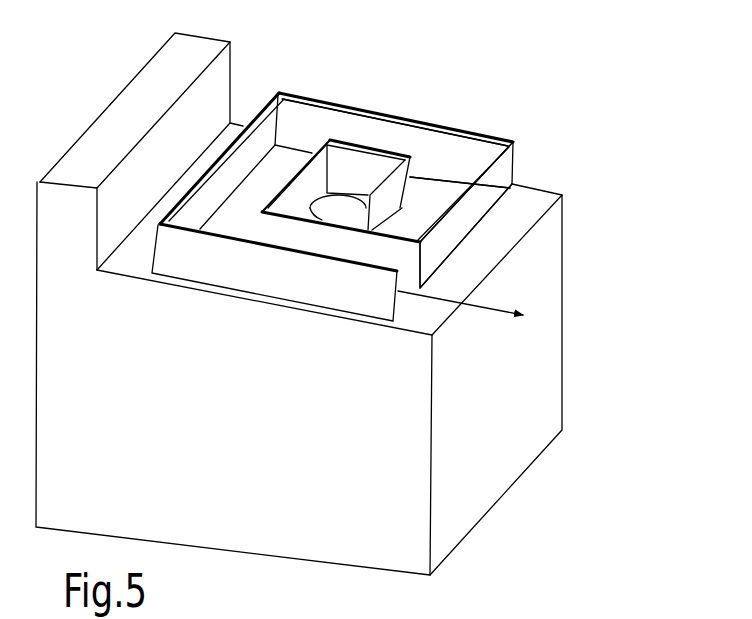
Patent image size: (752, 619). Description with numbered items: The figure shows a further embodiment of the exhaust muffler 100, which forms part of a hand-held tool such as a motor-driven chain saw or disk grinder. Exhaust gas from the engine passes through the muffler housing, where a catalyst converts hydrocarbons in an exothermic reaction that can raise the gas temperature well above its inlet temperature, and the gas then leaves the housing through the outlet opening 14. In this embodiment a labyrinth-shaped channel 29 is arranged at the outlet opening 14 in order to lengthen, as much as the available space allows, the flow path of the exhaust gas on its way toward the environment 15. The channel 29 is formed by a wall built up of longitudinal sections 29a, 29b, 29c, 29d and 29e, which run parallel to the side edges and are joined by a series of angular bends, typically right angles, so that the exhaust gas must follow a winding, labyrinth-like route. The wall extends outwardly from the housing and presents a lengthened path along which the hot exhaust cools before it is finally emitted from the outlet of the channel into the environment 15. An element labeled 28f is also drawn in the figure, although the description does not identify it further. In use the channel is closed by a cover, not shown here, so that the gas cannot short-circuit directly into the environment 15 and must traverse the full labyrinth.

The exhaust muffler 100 is at (350, 309).
The environment 15 is at (618, 389).
The outlet opening 14 is at (438, 153).
The labyrinth-shaped channel 29 is at (408, 218).
The longitudinal section 29a is at (342, 168).
The longitudinal section 29b is at (400, 225).
The longitudinal section 29c is at (510, 137).
The longitudinal section 29d is at (427, 195).
The longitudinal section 29e is at (285, 162).
The front wall 28f is at (318, 237).